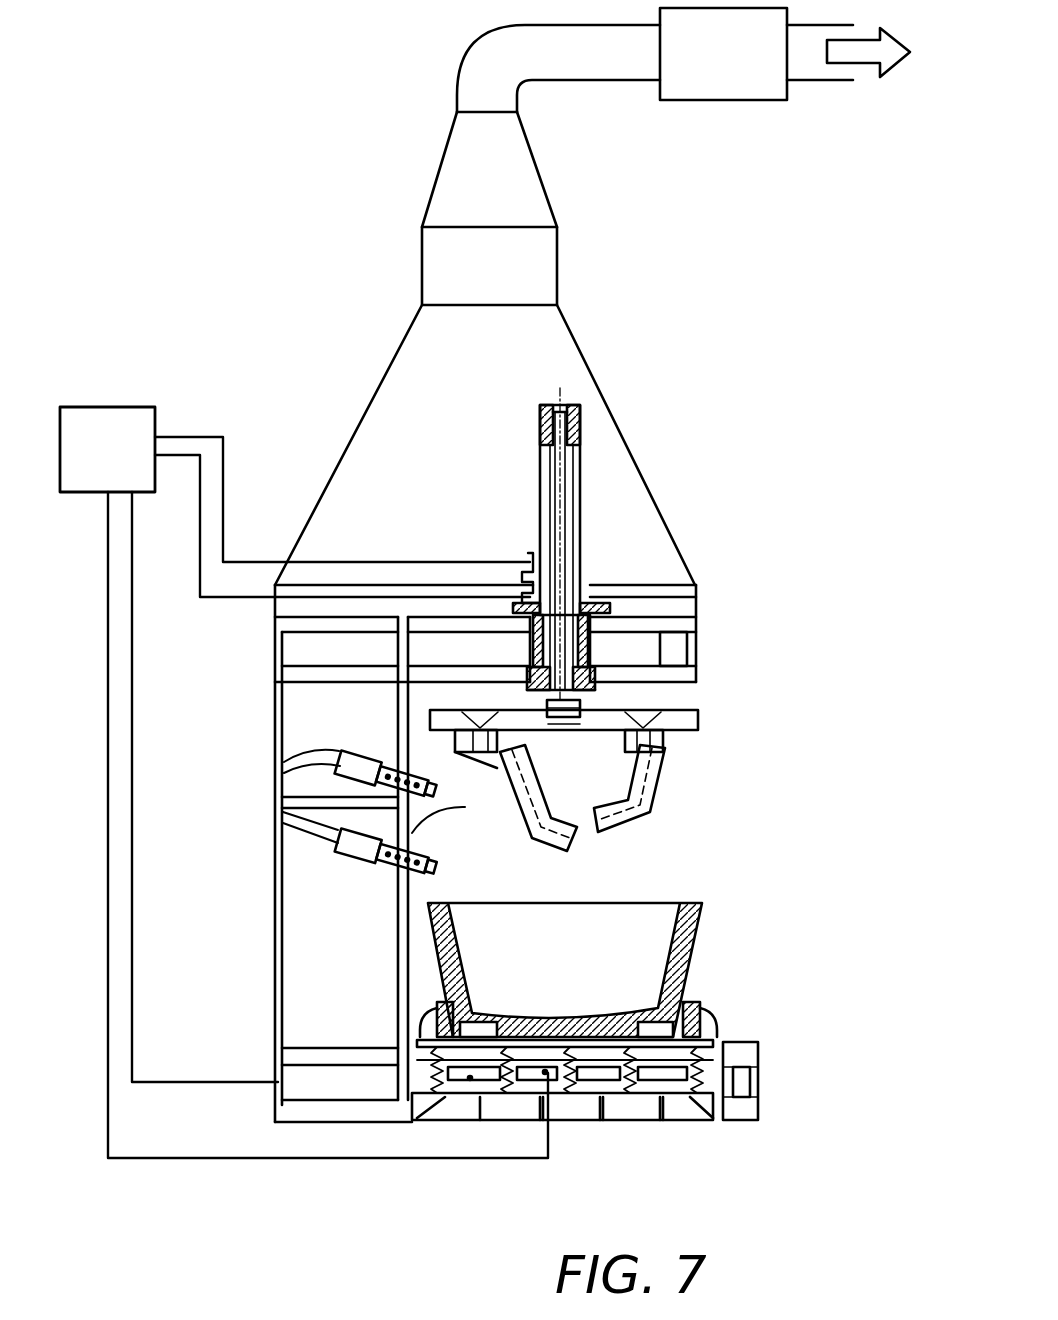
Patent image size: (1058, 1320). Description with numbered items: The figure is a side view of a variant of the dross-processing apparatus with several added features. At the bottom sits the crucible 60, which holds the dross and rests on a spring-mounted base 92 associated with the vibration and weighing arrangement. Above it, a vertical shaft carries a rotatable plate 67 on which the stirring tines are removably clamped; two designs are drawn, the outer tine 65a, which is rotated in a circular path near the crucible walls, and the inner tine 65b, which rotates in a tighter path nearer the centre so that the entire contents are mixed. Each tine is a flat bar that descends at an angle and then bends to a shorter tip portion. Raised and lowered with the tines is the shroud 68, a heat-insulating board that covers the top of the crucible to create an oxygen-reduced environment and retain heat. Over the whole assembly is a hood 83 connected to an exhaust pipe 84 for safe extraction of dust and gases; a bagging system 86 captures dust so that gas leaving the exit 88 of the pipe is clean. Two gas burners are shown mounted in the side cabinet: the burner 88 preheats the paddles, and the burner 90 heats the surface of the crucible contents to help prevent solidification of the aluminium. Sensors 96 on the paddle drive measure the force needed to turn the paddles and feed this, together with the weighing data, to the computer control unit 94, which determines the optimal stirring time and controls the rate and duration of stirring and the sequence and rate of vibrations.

The crucible 60 is at (568, 1023).
The tine 65a is at (643, 808).
The tine 65b is at (517, 753).
The rotatable plate 67 is at (665, 712).
The shroud 68 is at (698, 720).
The hood 83 is at (410, 408).
The exhaust pipe 84 is at (513, 42).
The bagging system 86 is at (722, 88).
The gas burner 88 is at (870, 55).
The gas burner 90 is at (365, 870).
The spring-loaded base 92 is at (470, 1118).
The computer control unit 94 is at (93, 478).
The sensors 96 is at (553, 580).